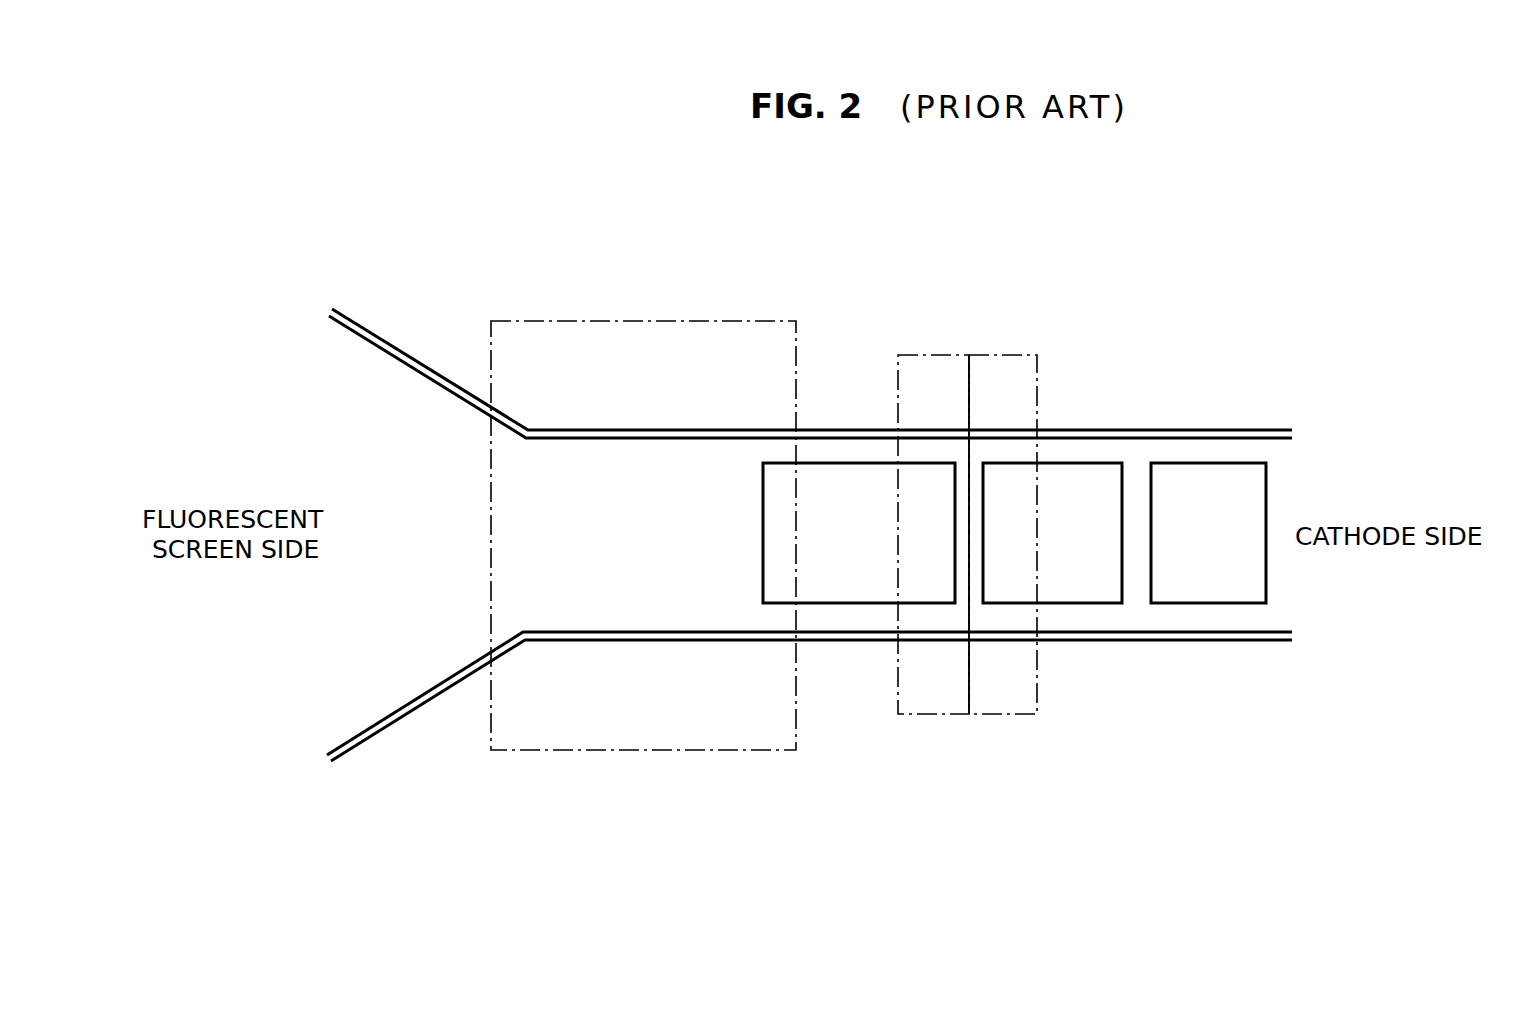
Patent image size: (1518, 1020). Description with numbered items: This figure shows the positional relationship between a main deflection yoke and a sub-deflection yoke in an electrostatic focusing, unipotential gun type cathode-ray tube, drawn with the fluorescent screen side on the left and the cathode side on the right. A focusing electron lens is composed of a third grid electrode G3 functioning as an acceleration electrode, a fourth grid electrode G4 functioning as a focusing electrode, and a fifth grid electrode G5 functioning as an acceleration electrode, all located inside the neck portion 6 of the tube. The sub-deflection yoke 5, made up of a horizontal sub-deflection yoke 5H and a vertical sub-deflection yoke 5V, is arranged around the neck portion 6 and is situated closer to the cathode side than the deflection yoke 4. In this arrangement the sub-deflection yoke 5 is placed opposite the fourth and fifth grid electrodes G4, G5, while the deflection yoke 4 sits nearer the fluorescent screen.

The deflection yoke 4 is at (573, 752).
The sub-deflection yoke 5 is at (966, 462).
The vertical sub-deflection yoke 5V is at (915, 355).
The horizontal sub-deflection yoke 5H is at (988, 355).
The neck portion 6 is at (1184, 430).
The fifth grid electrode G5 is at (845, 592).
The fourth grid electrode G4 is at (1088, 592).
The third grid electrode G3 is at (1220, 592).